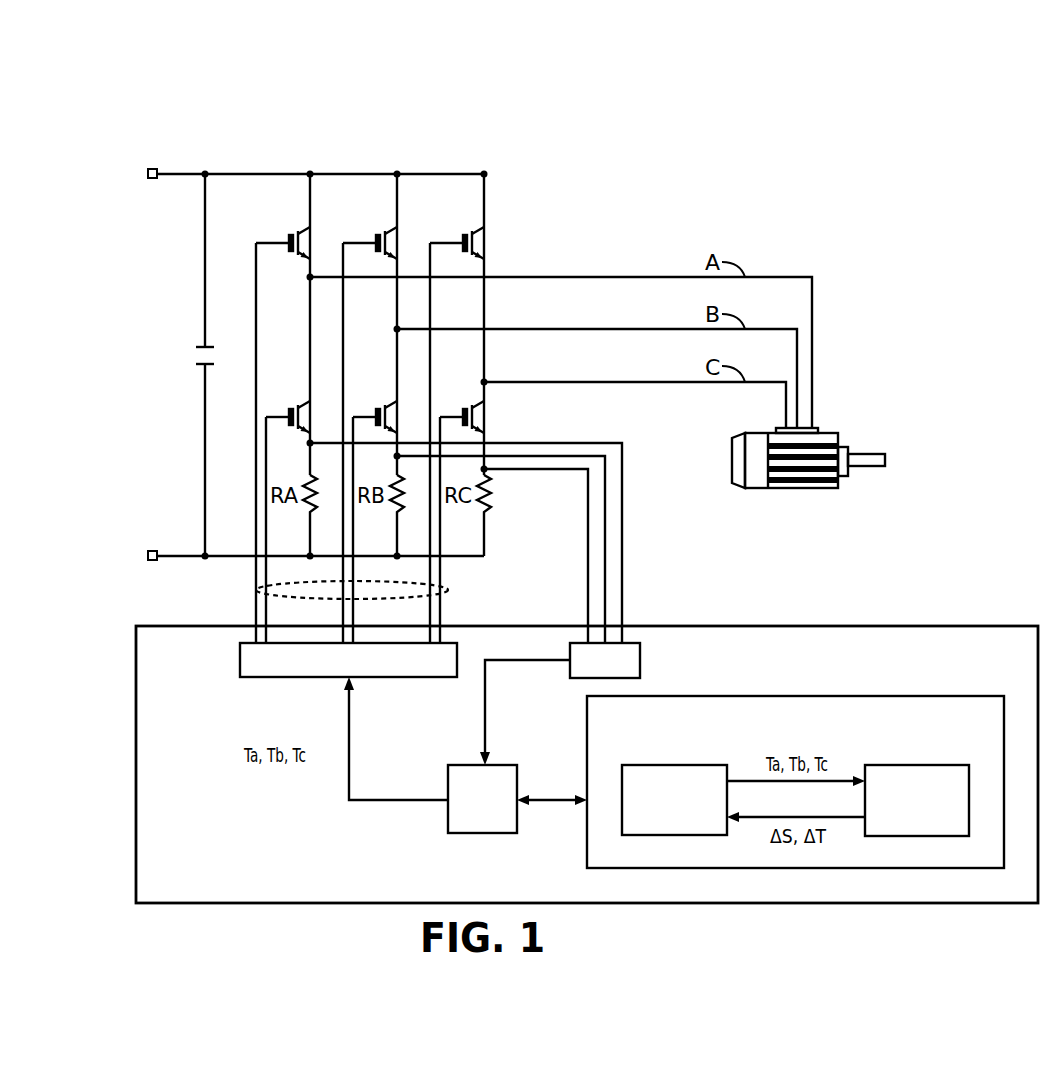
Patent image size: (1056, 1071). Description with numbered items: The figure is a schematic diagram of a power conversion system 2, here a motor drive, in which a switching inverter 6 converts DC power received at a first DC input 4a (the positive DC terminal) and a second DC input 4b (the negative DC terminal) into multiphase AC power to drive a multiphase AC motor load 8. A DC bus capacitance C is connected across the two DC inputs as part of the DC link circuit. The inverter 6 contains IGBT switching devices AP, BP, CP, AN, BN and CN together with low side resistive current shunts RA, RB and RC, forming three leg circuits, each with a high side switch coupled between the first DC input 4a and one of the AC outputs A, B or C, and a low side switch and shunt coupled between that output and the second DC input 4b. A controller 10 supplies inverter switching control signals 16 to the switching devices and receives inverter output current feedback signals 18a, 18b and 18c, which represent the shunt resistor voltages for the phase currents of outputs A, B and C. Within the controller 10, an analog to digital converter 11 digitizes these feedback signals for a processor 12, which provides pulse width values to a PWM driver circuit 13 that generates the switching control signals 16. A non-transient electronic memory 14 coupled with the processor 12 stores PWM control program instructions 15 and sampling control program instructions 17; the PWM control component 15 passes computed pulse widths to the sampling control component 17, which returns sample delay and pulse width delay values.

The power conversion system 2 is at (149, 100).
The first DC input 4a is at (151, 167).
The second DC input 4b is at (151, 549).
The switching inverter 6 is at (500, 131).
The multiphase AC motor load 8 is at (830, 432).
The controller 10 is at (935, 626).
The analog to digital converter 11 is at (641, 660).
The processor 12 is at (466, 765).
The PWM driver circuit 13 is at (240, 660).
The non-transient electronic memory 14 is at (797, 696).
The PWM control program instructions 15 is at (672, 765).
The inverter switching control signals 16 is at (258, 592).
The sampling control program instructions 17 is at (920, 765).
The inverter output current feedback signal 18a is at (605, 442).
The inverter output current feedback signal 18b is at (605, 469).
The inverter output current feedback signal 18c is at (588, 487).